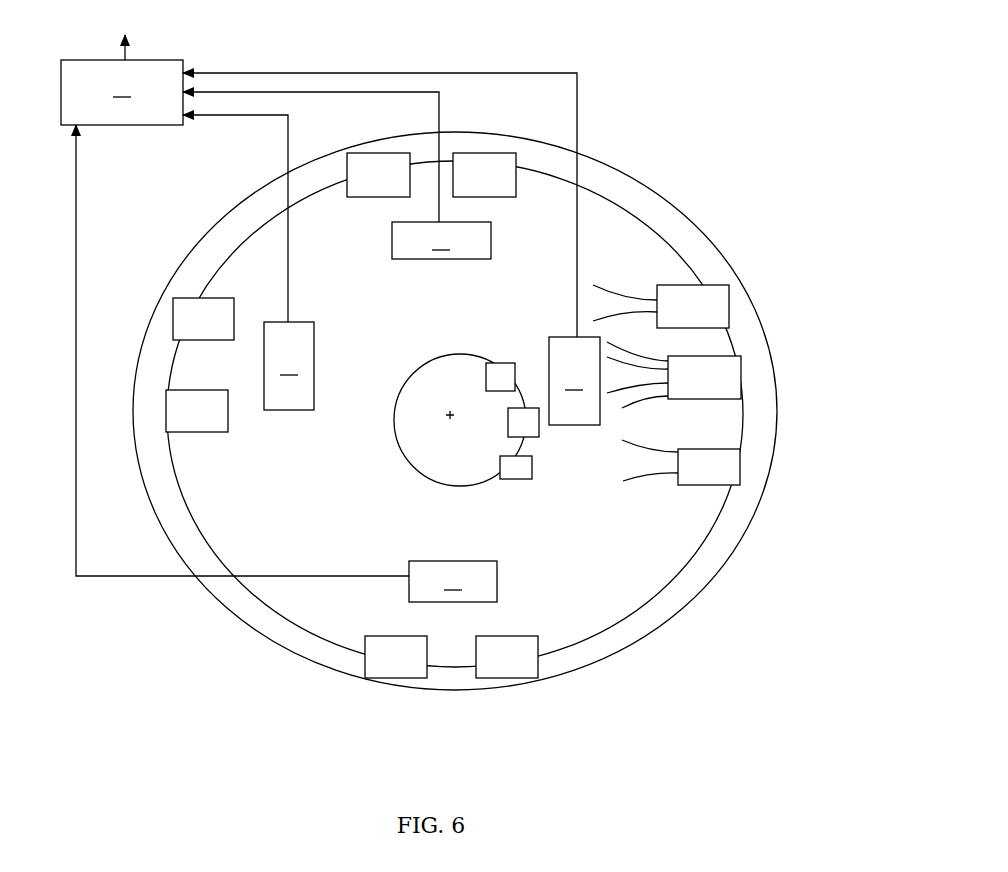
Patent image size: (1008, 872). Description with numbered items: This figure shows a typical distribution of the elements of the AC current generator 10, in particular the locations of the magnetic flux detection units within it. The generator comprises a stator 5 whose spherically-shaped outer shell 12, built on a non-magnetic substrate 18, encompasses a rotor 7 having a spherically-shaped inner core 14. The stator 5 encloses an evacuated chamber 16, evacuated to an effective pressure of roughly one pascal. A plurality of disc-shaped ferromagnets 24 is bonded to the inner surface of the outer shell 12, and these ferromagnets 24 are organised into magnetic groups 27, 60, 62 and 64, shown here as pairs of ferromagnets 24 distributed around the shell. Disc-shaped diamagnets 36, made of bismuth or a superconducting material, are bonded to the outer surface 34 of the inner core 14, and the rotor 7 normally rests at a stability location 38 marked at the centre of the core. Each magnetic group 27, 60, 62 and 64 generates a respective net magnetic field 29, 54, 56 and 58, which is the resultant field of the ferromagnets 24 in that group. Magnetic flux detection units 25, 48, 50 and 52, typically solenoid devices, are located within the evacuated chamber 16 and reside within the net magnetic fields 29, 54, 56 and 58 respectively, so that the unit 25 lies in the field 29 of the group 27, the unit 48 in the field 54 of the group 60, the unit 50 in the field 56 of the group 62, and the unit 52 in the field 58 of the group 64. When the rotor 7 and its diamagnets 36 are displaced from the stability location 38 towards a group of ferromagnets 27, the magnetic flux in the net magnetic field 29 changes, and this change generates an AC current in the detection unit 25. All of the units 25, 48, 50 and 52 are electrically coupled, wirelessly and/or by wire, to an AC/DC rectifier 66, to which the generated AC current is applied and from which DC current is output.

The stator 5 is at (778, 463).
The rotor 7 is at (395, 376).
The AC current generator 10 is at (778, 132).
The outer shell 12 is at (168, 285).
The inner core 14 is at (472, 353).
The evacuated chamber 16 is at (569, 585).
The substrate 18 is at (173, 527).
The ferromagnet 24 is at (453, 415).
The magnetic flux detection unit 25 is at (391, 249).
The group of ferromagnets 27 is at (744, 330).
The net magnetic field 29 is at (631, 427).
The outer surface 34 is at (432, 482).
The diamagnet 36 is at (498, 362).
The stability location 38 is at (440, 414).
The magnetic flux detection unit 48 is at (337, 175).
The magnetic flux detection unit 50 is at (248, 262).
The magnetic flux detection unit 52 is at (453, 581).
The net magnetic field 54 is at (418, 203).
The net magnetic field 56 is at (243, 373).
The net magnetic field 58 is at (437, 622).
The magnetic group 60 is at (487, 144).
The magnetic group 62 is at (162, 348).
The magnetic group 64 is at (447, 680).
The AC/DC rectifier 66 is at (122, 68).